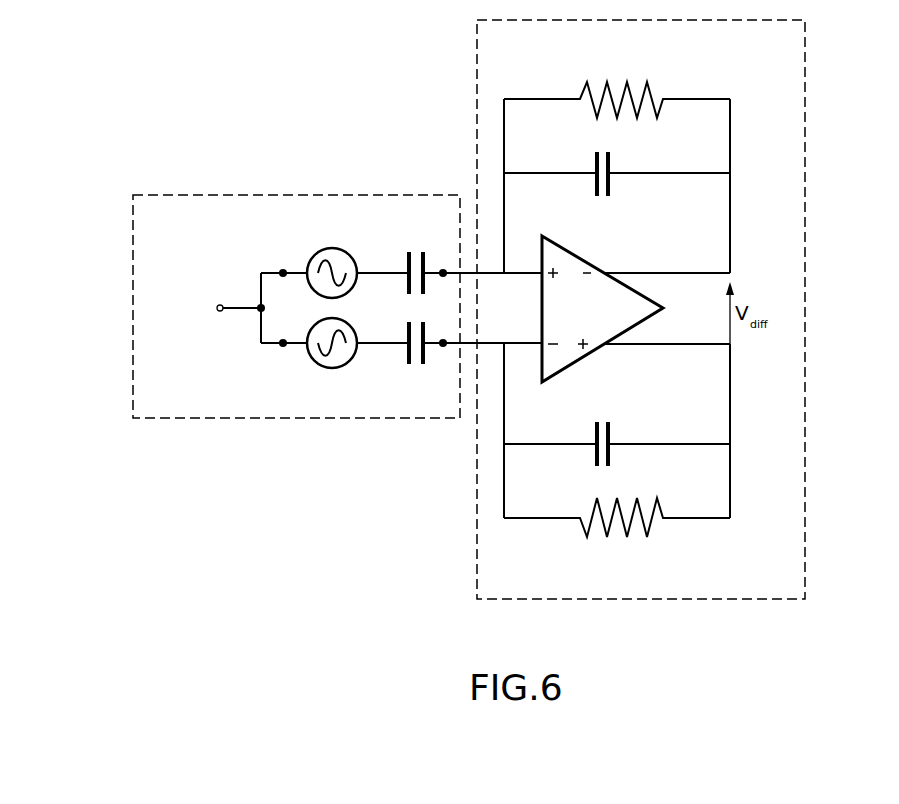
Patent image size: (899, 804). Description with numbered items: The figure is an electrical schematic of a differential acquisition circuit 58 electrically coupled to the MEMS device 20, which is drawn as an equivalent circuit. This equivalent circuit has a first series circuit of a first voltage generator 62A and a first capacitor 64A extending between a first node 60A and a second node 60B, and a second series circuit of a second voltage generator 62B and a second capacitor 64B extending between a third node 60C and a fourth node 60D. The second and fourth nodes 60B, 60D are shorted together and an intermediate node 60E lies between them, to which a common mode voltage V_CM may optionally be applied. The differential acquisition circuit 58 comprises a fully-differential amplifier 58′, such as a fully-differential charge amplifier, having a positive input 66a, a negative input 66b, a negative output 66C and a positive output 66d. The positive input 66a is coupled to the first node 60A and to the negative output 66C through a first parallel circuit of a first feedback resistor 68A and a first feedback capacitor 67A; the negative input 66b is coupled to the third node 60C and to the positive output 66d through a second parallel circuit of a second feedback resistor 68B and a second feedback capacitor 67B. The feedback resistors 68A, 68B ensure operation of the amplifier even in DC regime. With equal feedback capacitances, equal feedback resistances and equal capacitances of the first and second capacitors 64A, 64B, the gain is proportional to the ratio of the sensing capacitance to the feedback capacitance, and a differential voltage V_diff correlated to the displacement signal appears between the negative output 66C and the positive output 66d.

The MEMS device 20 is at (240, 410).
The differential acquisition circuit 58 is at (787, 185).
The fully-differential amplifier 58′ is at (628, 317).
The first node 60A is at (443, 268).
The second node 60B is at (282, 268).
The third node 60C is at (443, 350).
The fourth node 60D is at (283, 348).
The intermediate node 60E is at (259, 306).
The first voltage generator 62A is at (313, 256).
The second voltage generator 62B is at (306, 356).
The first capacitor 64A is at (407, 268).
The second capacitor 64B is at (407, 350).
The positive input 66a is at (536, 268).
The negative input 66b is at (536, 349).
The negative output 66C is at (611, 264).
The positive output 66d is at (606, 349).
The first feedback capacitor 67A is at (611, 165).
The second feedback capacitor 67B is at (611, 430).
The first feedback resistor 68A is at (650, 93).
The second feedback resistor 68B is at (648, 525).